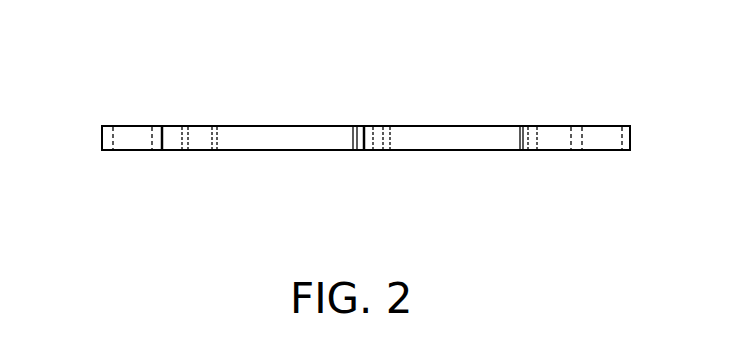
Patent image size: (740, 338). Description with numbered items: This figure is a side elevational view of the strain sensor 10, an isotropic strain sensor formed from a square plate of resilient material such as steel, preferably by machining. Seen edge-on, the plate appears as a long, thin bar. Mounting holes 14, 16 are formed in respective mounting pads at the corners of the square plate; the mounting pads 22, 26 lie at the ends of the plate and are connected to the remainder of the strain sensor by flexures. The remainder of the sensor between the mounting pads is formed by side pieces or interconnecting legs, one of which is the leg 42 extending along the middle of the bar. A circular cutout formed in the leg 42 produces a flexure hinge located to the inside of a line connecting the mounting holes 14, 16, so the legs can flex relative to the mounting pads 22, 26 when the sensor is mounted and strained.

The strain sensor 10 is at (557, 70).
The mounting hole 14 is at (140, 140).
The mounting hole 16 is at (602, 141).
The mounting pad 22 is at (100, 130).
The mounting pad 26 is at (629, 128).
The interconnecting leg 42 is at (300, 138).